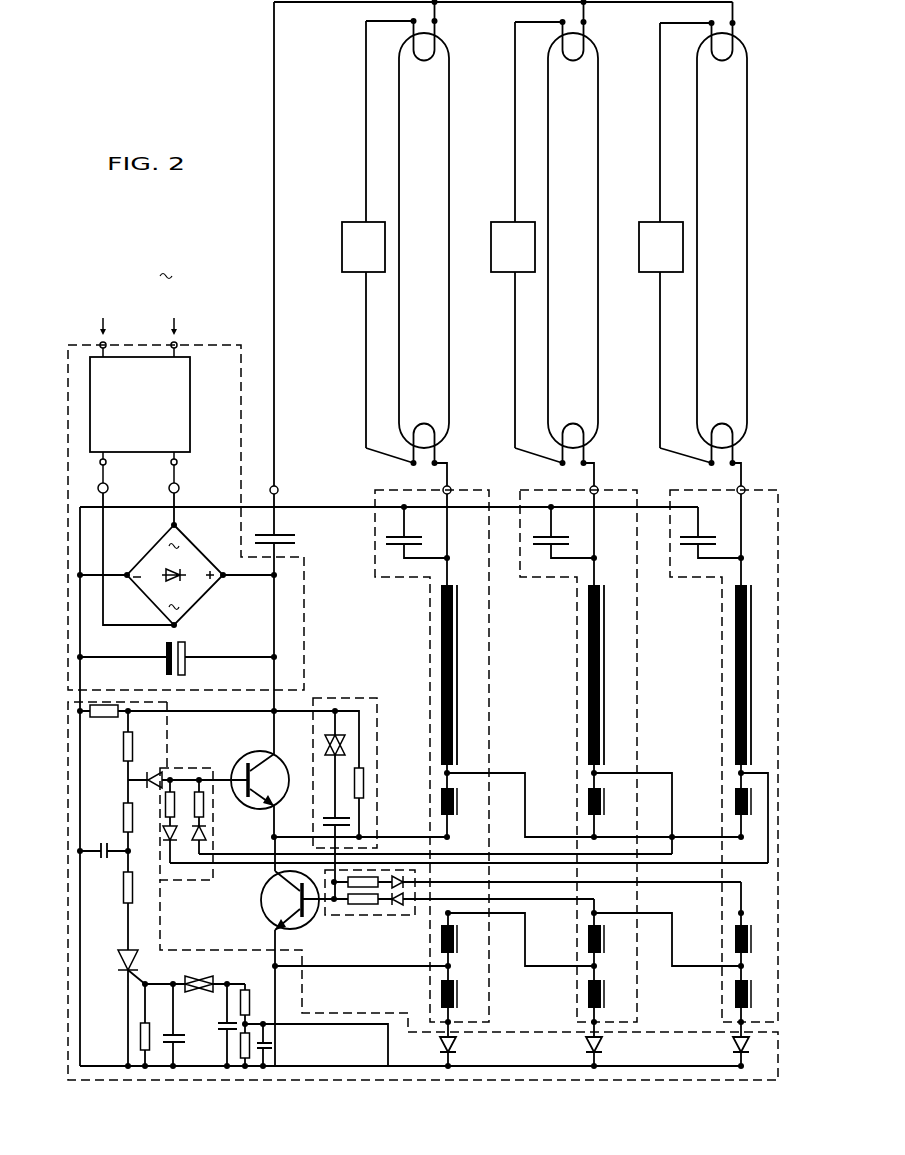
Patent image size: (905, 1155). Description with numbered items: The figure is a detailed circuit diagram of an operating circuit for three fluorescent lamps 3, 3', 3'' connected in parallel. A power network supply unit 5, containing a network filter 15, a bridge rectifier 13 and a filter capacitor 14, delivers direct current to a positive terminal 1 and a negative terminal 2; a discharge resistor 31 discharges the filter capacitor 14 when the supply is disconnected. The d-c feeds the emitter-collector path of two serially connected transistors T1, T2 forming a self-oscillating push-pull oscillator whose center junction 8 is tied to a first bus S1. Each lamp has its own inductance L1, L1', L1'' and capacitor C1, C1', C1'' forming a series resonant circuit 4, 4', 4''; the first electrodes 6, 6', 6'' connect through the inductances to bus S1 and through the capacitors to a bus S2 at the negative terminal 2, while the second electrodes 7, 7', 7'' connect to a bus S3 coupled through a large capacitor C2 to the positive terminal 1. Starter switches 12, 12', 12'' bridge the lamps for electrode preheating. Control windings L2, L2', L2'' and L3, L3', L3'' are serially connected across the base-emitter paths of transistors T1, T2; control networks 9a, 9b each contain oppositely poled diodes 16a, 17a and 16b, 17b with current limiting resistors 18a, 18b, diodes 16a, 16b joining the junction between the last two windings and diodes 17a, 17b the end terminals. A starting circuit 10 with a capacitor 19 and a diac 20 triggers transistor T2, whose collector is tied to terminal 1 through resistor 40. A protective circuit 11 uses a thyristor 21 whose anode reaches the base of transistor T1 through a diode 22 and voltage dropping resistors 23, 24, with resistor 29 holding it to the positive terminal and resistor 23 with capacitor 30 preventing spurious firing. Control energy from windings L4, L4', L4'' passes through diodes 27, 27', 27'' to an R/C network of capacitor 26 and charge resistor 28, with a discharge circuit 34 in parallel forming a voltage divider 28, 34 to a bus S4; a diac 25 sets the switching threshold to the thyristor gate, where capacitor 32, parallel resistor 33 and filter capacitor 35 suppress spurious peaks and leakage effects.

The positive terminal 1 is at (274, 657).
The negative terminal 2 is at (70, 656).
The fluorescent lamp 3 is at (430, 240).
The fluorescent lamp 3' is at (581, 240).
The fluorescent lamp 3'' is at (732, 240).
The series resonant circuit 4 is at (442, 756).
The series resonant circuit 4' is at (592, 756).
The series resonant circuit 4'' is at (739, 756).
The power network supply unit 5 is at (68, 408).
The first electrode 6 is at (406, 444).
The first electrode 6' is at (554, 444).
The first electrode 6'' is at (701, 444).
The second electrode 7 is at (402, 44).
The second electrode 7' is at (551, 44).
The second electrode 7'' is at (698, 44).
The center junction 8 is at (284, 828).
The control network 9a is at (195, 877).
The control network 9b is at (335, 912).
The starting circuit 10 is at (333, 697).
The protective circuit 11 is at (68, 858).
The starter switch 12 is at (352, 234).
The starter switch 12' is at (501, 235).
The starter switch 12'' is at (647, 235).
The bridge rectifier 13 is at (211, 592).
The filter capacitor 14 is at (185, 652).
The network filter 15 is at (190, 430).
The diode 16a is at (212, 835).
The diode 16b is at (404, 907).
The diode 17a is at (165, 839).
The diode 17b is at (406, 879).
The current limiting resistor 18a is at (201, 791).
The current limiting resistor 18b is at (361, 887).
The capacitor 19 is at (330, 808).
The diac 20 is at (329, 764).
The thyristor 21 is at (123, 1009).
The diode 22 is at (163, 787).
The voltage dropping resistor 23 is at (117, 837).
The voltage dropping resistor 24 is at (140, 911).
The diac 25 is at (195, 974).
The capacitor 26 is at (219, 1022).
The diode 27 is at (464, 1052).
The diode 27' is at (612, 1052).
The diode 27'' is at (758, 1052).
The charge resistor 28 is at (250, 997).
The resistor 29 is at (142, 757).
The capacitor 30 is at (102, 863).
The discharge resistor 31 is at (104, 723).
The capacitor 32 is at (180, 1044).
The resistor 33 is at (150, 1029).
The discharge circuit 34 is at (242, 1048).
The filter capacitor 35 is at (273, 1046).
The resistor 40 is at (367, 787).
The capacitor C1 is at (418, 532).
The capacitor C1' is at (565, 532).
The capacitor C1'' is at (712, 534).
The capacitor C2 is at (283, 536).
The inductance L1 is at (426, 641).
The inductance L1' is at (573, 641).
The inductance L1'' is at (718, 641).
The control winding L2 is at (517, 806).
The control winding L2' is at (664, 813).
The control winding L2'' is at (772, 818).
The control winding L3 is at (517, 945).
The control winding L3' is at (664, 939).
The control winding L3'' is at (772, 931).
The control winding L4 is at (461, 1008).
The control winding L4' is at (610, 1008).
The control winding L4'' is at (772, 1008).
The first bus S1 is at (406, 830).
The third bus S2 is at (328, 493).
The bus S3 is at (274, 237).
The bus S4 is at (345, 1028).
The transistor T1 is at (244, 774).
The transistor T2 is at (285, 951).